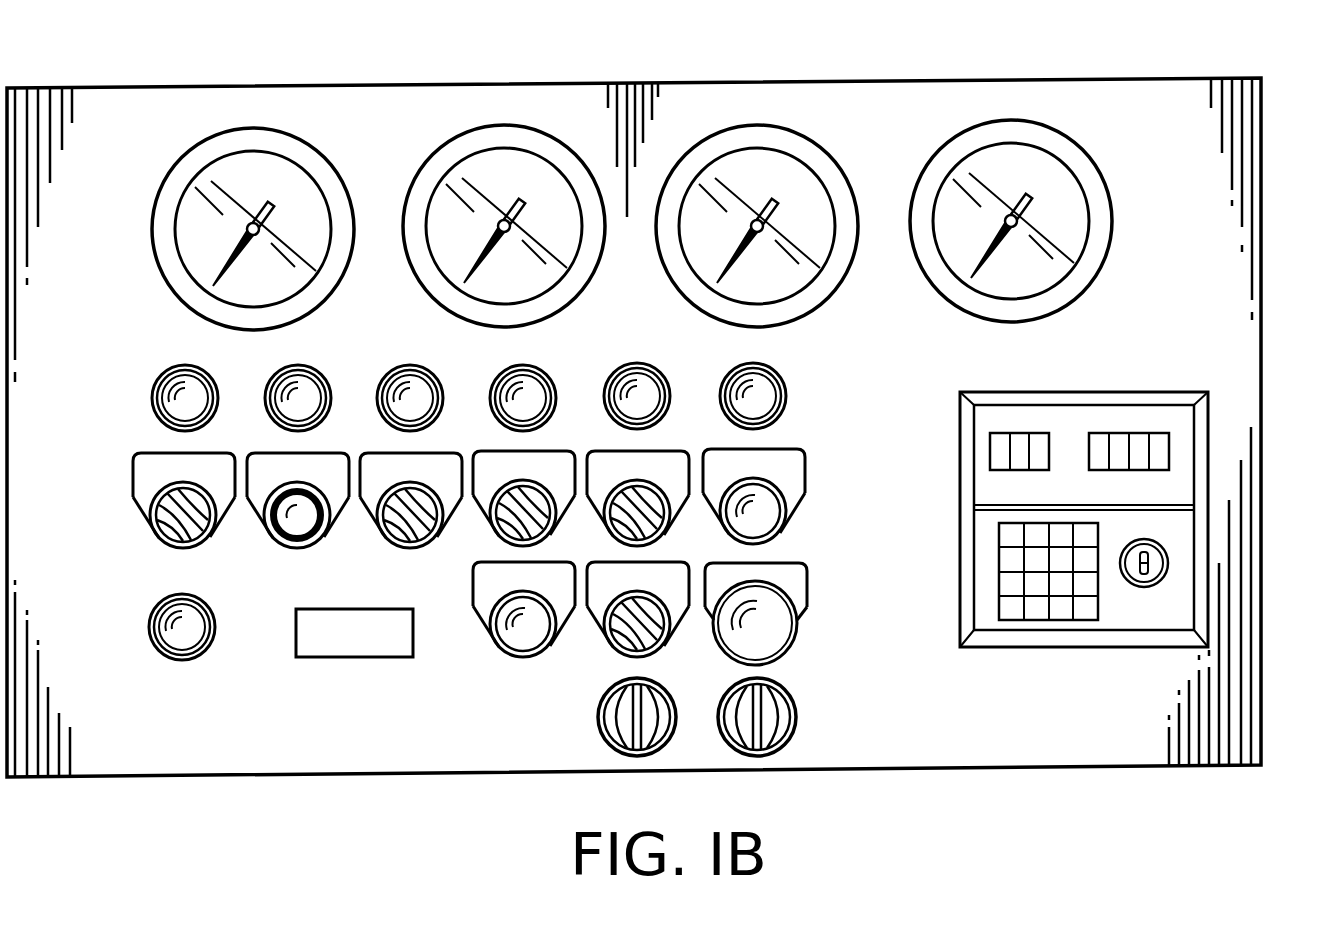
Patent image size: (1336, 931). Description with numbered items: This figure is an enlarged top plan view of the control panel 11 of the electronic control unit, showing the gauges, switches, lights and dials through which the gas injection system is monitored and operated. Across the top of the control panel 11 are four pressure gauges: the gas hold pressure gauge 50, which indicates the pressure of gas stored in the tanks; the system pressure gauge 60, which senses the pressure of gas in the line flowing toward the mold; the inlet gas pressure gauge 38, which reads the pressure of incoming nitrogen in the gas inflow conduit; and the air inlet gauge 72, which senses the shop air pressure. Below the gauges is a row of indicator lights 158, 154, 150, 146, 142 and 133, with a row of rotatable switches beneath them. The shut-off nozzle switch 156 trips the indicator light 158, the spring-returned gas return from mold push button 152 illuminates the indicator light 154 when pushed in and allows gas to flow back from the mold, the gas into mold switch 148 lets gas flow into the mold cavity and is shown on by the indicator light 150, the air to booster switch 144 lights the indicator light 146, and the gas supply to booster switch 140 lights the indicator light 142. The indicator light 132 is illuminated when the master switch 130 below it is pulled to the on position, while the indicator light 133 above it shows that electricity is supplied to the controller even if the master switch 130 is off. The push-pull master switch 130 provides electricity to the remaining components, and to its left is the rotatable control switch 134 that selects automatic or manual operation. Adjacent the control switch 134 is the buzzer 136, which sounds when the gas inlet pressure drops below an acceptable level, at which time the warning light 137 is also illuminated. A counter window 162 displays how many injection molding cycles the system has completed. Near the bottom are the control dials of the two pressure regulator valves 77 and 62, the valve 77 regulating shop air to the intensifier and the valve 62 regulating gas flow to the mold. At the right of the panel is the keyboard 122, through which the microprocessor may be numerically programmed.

The control panel 11 is at (203, 783).
The gas hold pressure gauge 50 is at (258, 178).
The system pressure gauge 60 is at (527, 177).
The inlet gas pressure gauge 38 is at (767, 173).
The air inlet gauge 72 is at (1017, 172).
The indicator light 158 is at (163, 378).
The indicator light 154 is at (280, 382).
The indicator light 150 is at (397, 382).
The indicator light 146 is at (505, 382).
The indicator light 142 is at (630, 380).
The indicator light 133 is at (762, 388).
The shut-off nozzle switch 156 is at (157, 527).
The gas return from mold push button 152 is at (292, 520).
The gas into mold switch 148 is at (392, 532).
The air to booster switch 144 is at (538, 512).
The gas supply to booster switch 140 is at (650, 512).
The indicator light 132 is at (763, 507).
The warning light 137 is at (170, 632).
The counter window 162 is at (322, 638).
The buzzer 136 is at (520, 630).
The control switch 134 is at (623, 643).
The master switch 130 is at (760, 623).
The pressure regulator valve 77 is at (635, 718).
The controllable pressure regulator valve 62 is at (767, 715).
The keyboard 122 is at (1157, 484).